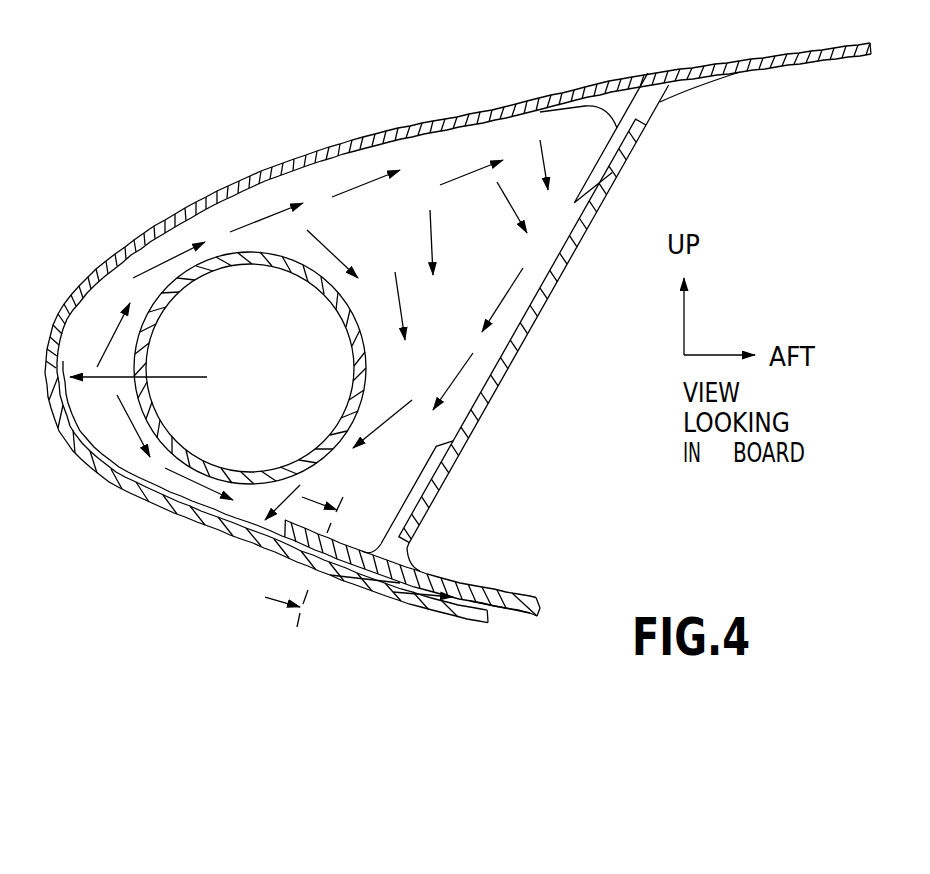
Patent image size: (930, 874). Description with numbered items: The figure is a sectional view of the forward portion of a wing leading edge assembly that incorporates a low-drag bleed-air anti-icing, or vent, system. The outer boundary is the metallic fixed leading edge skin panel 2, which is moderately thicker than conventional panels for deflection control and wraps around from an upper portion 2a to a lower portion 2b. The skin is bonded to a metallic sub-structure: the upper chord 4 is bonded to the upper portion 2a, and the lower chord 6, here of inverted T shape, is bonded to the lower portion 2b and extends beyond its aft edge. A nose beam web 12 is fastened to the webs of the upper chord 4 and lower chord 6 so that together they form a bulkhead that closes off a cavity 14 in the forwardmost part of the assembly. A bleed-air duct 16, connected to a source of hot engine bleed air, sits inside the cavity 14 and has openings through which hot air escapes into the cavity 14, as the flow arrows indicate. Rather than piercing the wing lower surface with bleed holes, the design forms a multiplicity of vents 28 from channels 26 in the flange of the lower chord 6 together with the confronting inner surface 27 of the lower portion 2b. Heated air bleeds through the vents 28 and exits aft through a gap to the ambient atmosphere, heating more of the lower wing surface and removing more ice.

The fixed leading edge skin panel 2 is at (112, 233).
The upper portion of fixed leading edge skin panel 2a is at (467, 113).
The lower portion of fixed leading edge skin panel 2b is at (405, 603).
The upper chord 4 is at (627, 110).
The lower chord 6 is at (422, 573).
The nose beam web 12 is at (533, 327).
The cavity 14 is at (353, 177).
The bleed-air duct 16 is at (220, 257).
The channel 26 is at (368, 577).
The inner surface of lower portion of skin panel 27 is at (487, 593).
The vent 28 is at (500, 617).